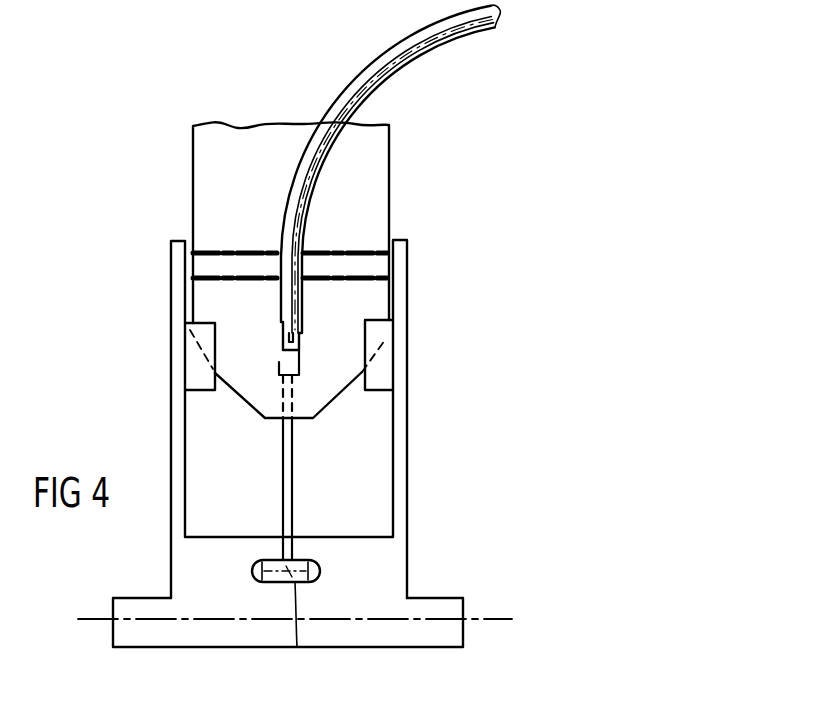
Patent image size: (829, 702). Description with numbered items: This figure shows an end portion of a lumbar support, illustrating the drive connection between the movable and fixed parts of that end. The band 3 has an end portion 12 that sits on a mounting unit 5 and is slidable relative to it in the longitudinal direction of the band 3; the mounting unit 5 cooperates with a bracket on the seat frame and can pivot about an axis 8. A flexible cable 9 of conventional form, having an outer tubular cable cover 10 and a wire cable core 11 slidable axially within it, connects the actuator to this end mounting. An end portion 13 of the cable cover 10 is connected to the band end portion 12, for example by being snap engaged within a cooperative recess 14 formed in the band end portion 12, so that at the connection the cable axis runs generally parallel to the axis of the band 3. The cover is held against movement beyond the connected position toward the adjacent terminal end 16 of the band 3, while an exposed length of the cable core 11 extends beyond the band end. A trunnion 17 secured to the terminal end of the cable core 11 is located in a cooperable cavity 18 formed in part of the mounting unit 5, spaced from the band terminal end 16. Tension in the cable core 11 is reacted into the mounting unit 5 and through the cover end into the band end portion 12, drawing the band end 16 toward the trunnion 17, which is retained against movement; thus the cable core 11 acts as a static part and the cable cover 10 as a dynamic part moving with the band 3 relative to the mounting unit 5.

The band 3 is at (350, 187).
The mounting unit 5 is at (407, 488).
The axis 8 is at (487, 618).
The flexible cable 9 is at (411, 36).
The cable cover 10 is at (440, 31).
The cable core 11 is at (286, 470).
The end portion of the band 12 is at (345, 302).
The end portion of the cable cover 13 is at (297, 333).
The recess 14 is at (298, 355).
The terminal end of the band 16 is at (302, 422).
The trunnion 17 is at (297, 647).
The cavity 18 is at (320, 573).